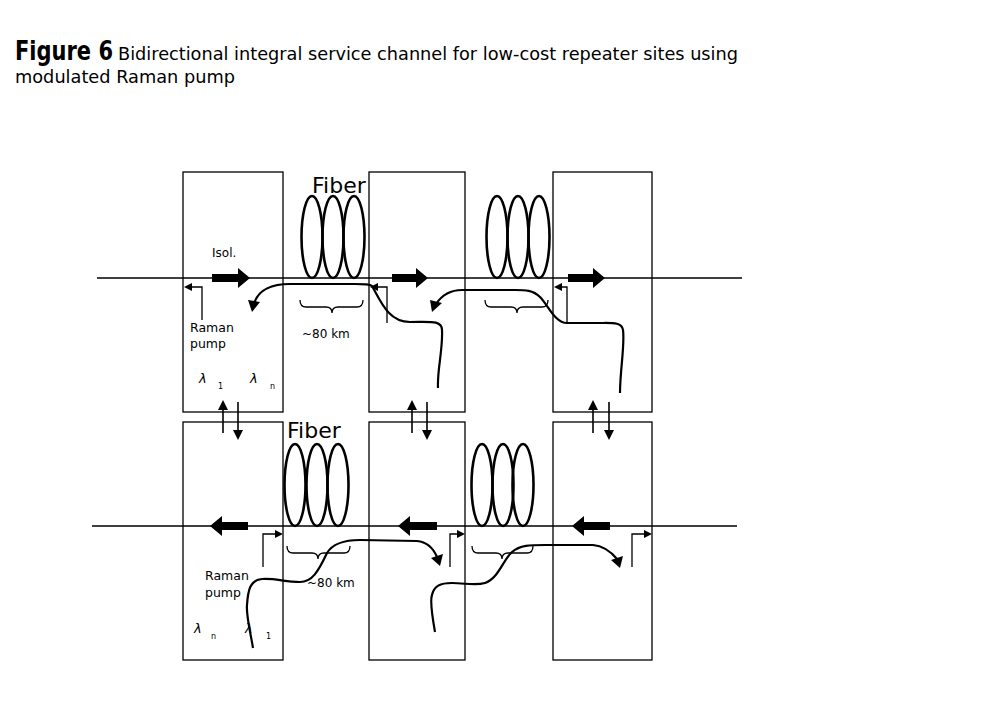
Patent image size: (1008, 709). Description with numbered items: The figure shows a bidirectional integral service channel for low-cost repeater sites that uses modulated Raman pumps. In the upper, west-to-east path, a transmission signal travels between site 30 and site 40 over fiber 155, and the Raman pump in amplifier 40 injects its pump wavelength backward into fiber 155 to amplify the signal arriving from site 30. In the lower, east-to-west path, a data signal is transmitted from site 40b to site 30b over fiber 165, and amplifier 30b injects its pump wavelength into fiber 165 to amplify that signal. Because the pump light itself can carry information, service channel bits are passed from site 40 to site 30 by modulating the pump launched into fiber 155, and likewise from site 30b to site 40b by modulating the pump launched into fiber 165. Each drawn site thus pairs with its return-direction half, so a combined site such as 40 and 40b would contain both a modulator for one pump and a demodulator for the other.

The site 30 is at (409, 172).
The site 40 is at (587, 172).
The fiber 155 is at (517, 256).
The fiber 165 is at (506, 504).
The site 30b is at (437, 660).
The site 40b is at (622, 660).